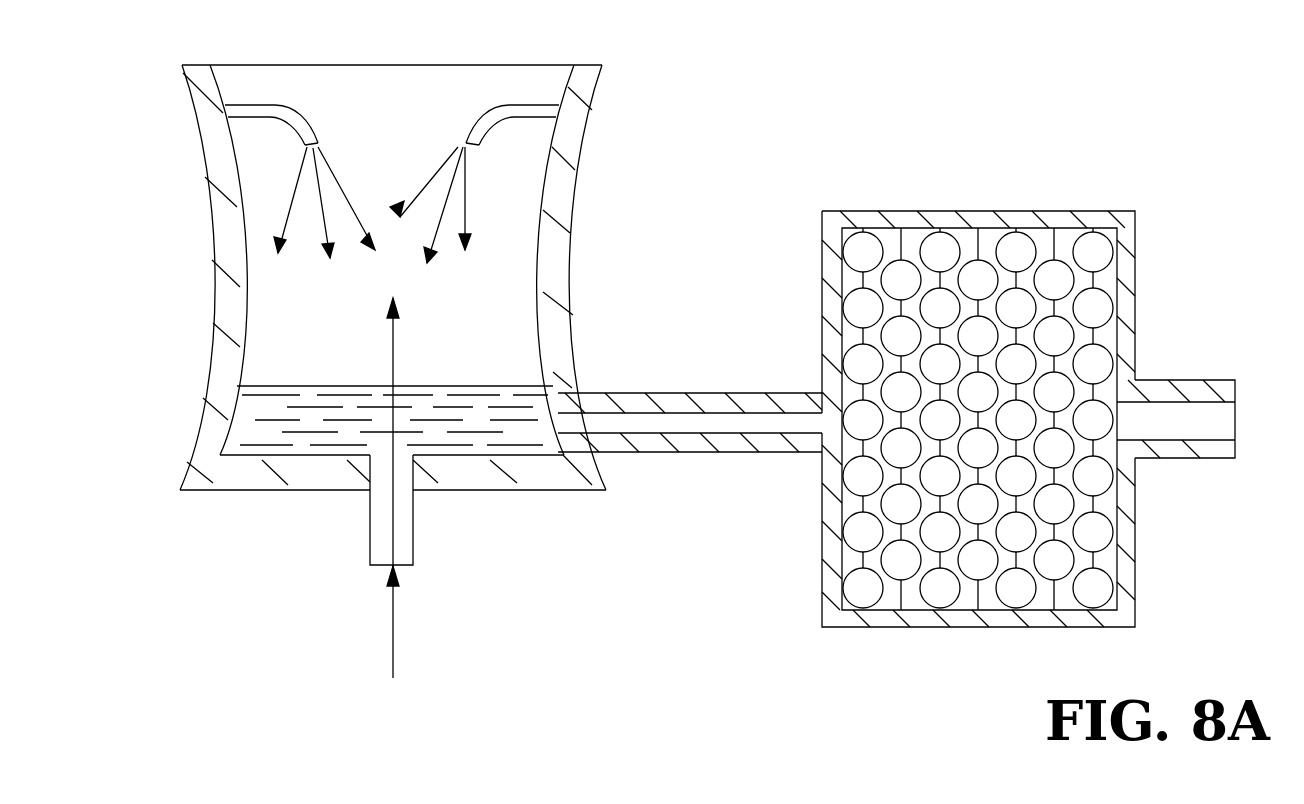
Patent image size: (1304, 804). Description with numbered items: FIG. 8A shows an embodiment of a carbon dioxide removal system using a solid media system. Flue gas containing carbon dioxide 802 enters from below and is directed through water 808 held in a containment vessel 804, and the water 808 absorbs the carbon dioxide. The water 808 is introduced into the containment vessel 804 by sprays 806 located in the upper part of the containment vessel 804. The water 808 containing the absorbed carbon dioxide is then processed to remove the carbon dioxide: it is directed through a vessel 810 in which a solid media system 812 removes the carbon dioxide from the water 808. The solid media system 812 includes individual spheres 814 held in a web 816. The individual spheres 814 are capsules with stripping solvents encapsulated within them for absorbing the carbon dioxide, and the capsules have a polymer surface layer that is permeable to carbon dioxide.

The flue gas containing carbon dioxide 802 is at (393, 628).
The containment vessel 804 is at (502, 317).
The sprays 806 is at (417, 177).
The water 808 is at (295, 387).
The vessel 810 is at (822, 275).
The solid media system 812 is at (1112, 190).
The individual spheres 814 is at (1093, 587).
The web 816 is at (1093, 340).